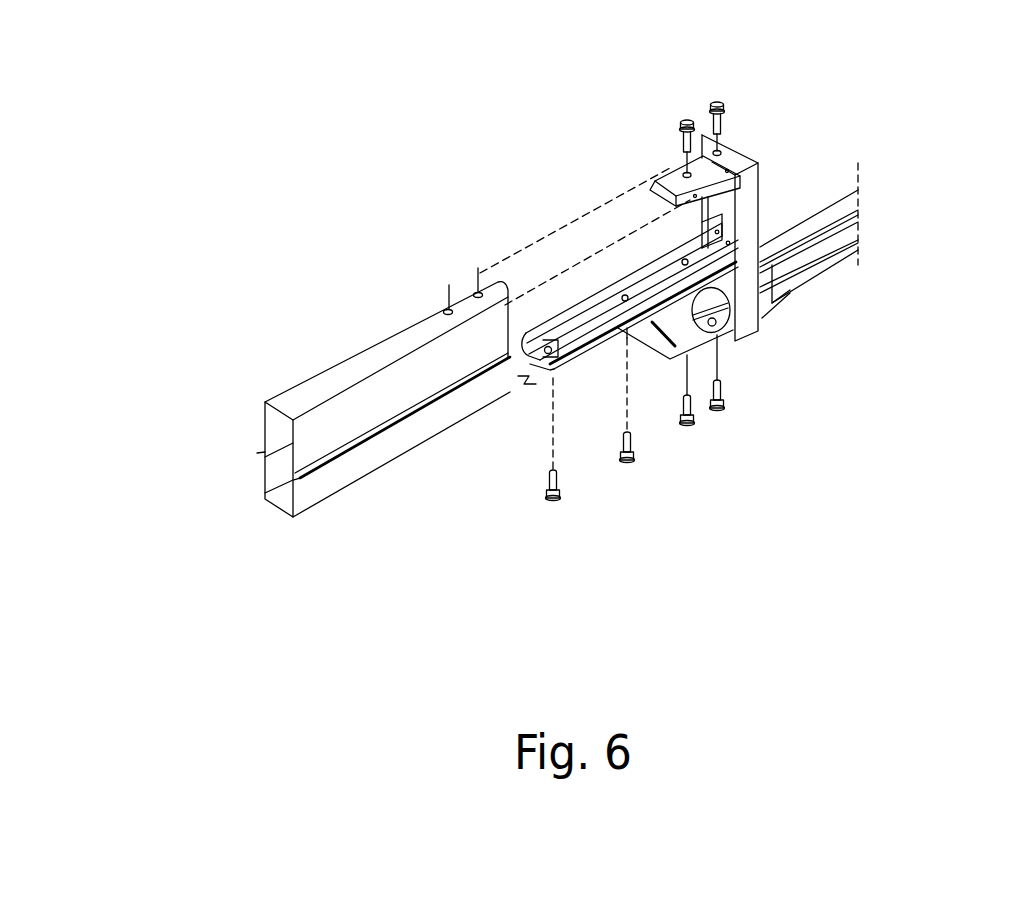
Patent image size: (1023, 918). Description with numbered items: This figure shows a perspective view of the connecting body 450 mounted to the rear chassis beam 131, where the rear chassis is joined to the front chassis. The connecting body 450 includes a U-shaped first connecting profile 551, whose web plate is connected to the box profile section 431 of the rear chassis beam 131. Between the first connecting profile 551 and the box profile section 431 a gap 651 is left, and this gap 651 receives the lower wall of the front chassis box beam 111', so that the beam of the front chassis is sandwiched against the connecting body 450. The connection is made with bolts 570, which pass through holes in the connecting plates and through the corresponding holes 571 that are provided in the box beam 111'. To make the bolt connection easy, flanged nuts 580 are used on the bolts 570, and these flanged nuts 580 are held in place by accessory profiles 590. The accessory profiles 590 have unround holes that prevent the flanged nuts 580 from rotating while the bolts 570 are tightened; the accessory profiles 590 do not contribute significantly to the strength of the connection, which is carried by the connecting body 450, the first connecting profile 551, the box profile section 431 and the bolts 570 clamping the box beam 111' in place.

The box beam 111' is at (342, 399).
The holes 571 is at (445, 311).
The accessory profiles 590 is at (585, 322).
The first connecting profile 551 is at (653, 295).
The bolts 570 is at (681, 133).
The connecting body 450 is at (790, 131).
The first longitudinally extending rear chassis beam 131 is at (830, 250).
The gap 651 is at (668, 280).
The flanged nuts 580 is at (530, 364).
The box profile section 431 is at (660, 345).